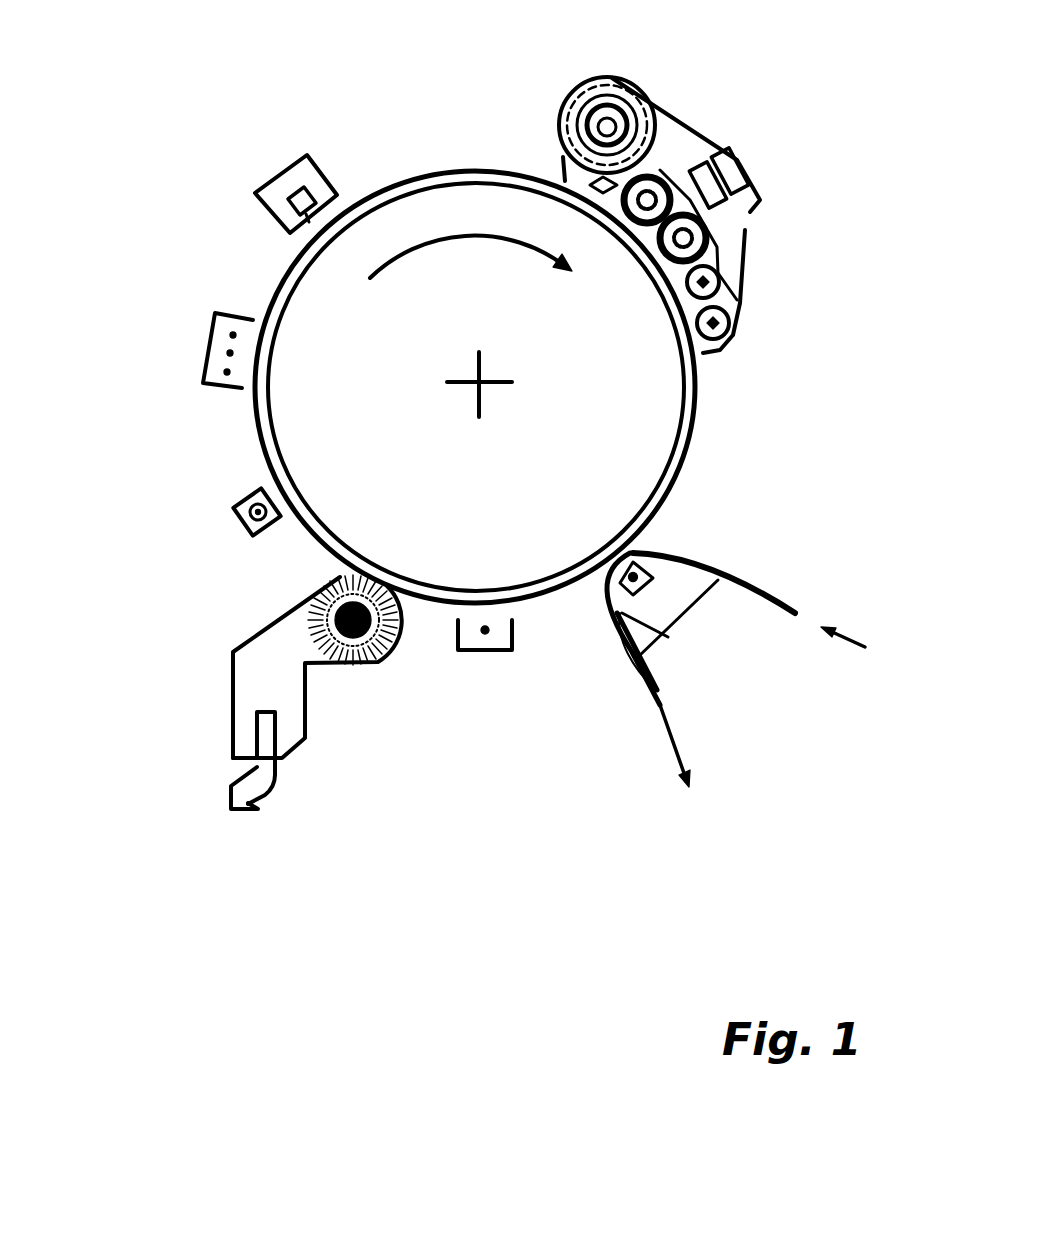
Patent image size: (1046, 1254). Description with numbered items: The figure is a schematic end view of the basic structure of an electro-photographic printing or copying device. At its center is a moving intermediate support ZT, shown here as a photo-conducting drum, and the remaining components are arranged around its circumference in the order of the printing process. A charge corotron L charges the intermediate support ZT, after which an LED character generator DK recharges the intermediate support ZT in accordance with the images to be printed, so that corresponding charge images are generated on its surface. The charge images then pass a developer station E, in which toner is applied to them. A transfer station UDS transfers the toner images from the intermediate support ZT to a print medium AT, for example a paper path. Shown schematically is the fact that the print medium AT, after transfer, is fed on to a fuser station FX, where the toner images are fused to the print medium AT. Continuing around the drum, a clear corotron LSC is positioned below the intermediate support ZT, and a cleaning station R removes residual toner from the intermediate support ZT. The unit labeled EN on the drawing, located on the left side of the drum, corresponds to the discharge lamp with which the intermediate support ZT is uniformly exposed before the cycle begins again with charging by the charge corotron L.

The intermediate support ZT is at (472, 212).
The LED character generator DK is at (300, 173).
The charge corotron L is at (217, 348).
The developer station E is at (772, 220).
The discharge corona device EN is at (233, 517).
The cleaning station R is at (233, 687).
The clear corotron LSC is at (488, 668).
The transfer station UDS is at (665, 552).
The print medium AT is at (797, 615).
The fuser station FX is at (691, 774).